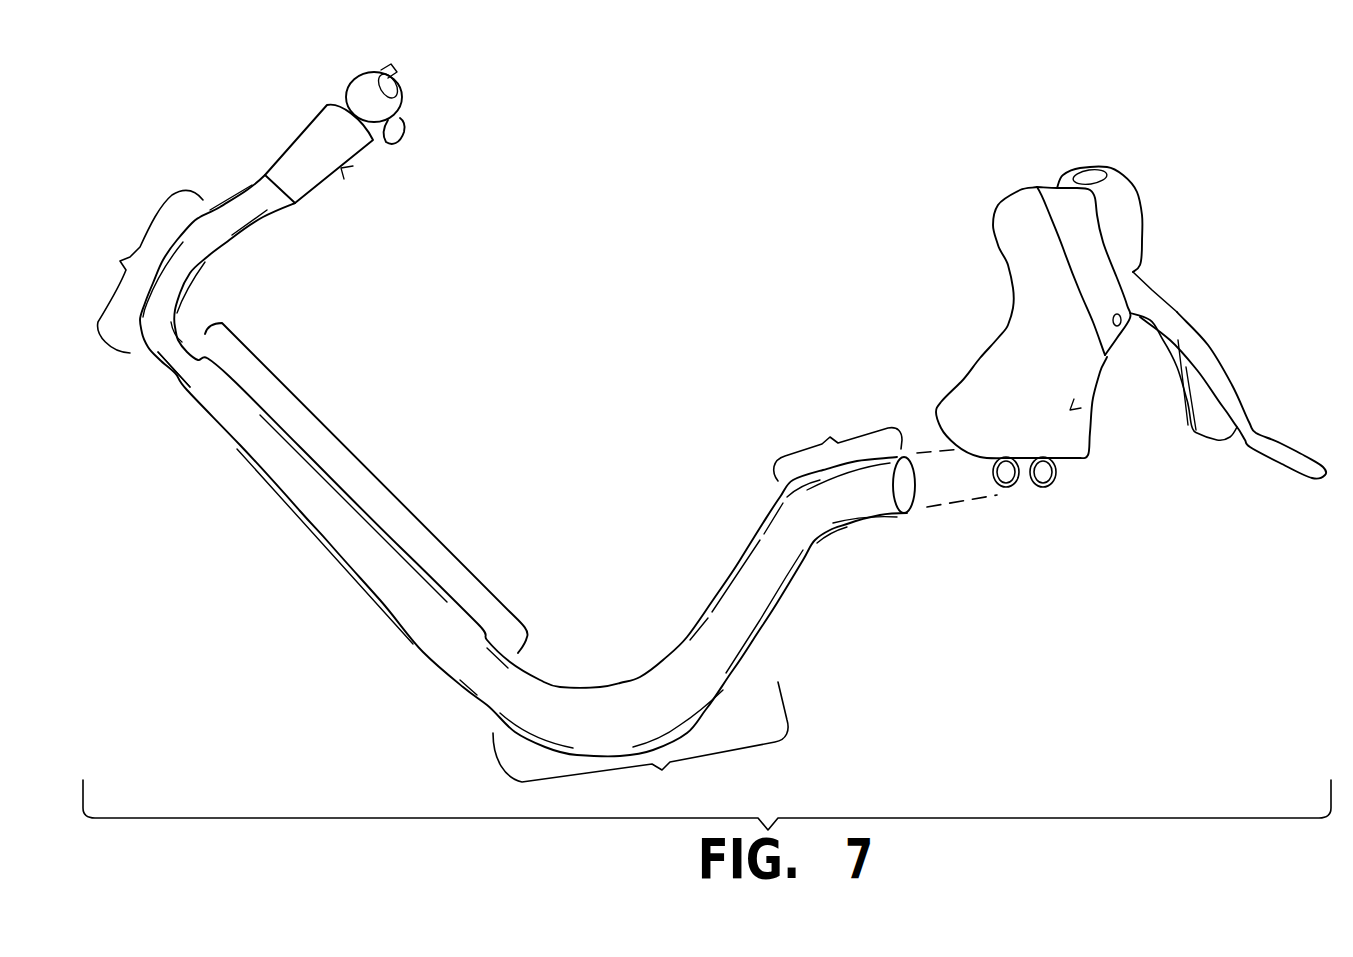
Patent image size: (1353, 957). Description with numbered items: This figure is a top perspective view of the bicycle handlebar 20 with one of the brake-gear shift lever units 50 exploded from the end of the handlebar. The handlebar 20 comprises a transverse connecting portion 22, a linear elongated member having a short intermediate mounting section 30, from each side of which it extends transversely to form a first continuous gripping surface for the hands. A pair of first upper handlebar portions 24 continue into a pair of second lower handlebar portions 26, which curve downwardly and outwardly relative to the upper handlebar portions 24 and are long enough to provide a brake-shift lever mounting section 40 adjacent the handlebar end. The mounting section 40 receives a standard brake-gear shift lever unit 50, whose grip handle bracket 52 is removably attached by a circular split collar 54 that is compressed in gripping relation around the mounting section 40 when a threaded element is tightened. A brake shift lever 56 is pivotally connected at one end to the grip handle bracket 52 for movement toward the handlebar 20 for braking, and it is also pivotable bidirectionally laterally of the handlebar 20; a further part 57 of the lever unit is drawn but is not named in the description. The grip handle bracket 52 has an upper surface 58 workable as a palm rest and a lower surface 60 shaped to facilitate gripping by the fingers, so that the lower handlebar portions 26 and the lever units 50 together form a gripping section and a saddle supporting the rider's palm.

The handlebar 20 is at (432, 418).
The transverse connecting portion 22 is at (387, 485).
The first upper handlebar portions 24 is at (437, 496).
The second lower handlebar portions 26 is at (838, 445).
The intermediate mounting section 30 is at (332, 535).
The brake-shift lever mounting section 40 is at (858, 498).
The brake-gear shift lever unit 50 is at (795, 291).
The grip handle bracket 52 is at (330, 178).
The circular collar 54 is at (1037, 492).
The brake shift lever 56 is at (1177, 317).
The lever pivot housing 57 is at (402, 113).
The upper surface 58 is at (1072, 411).
The lower surface 60 is at (341, 168).